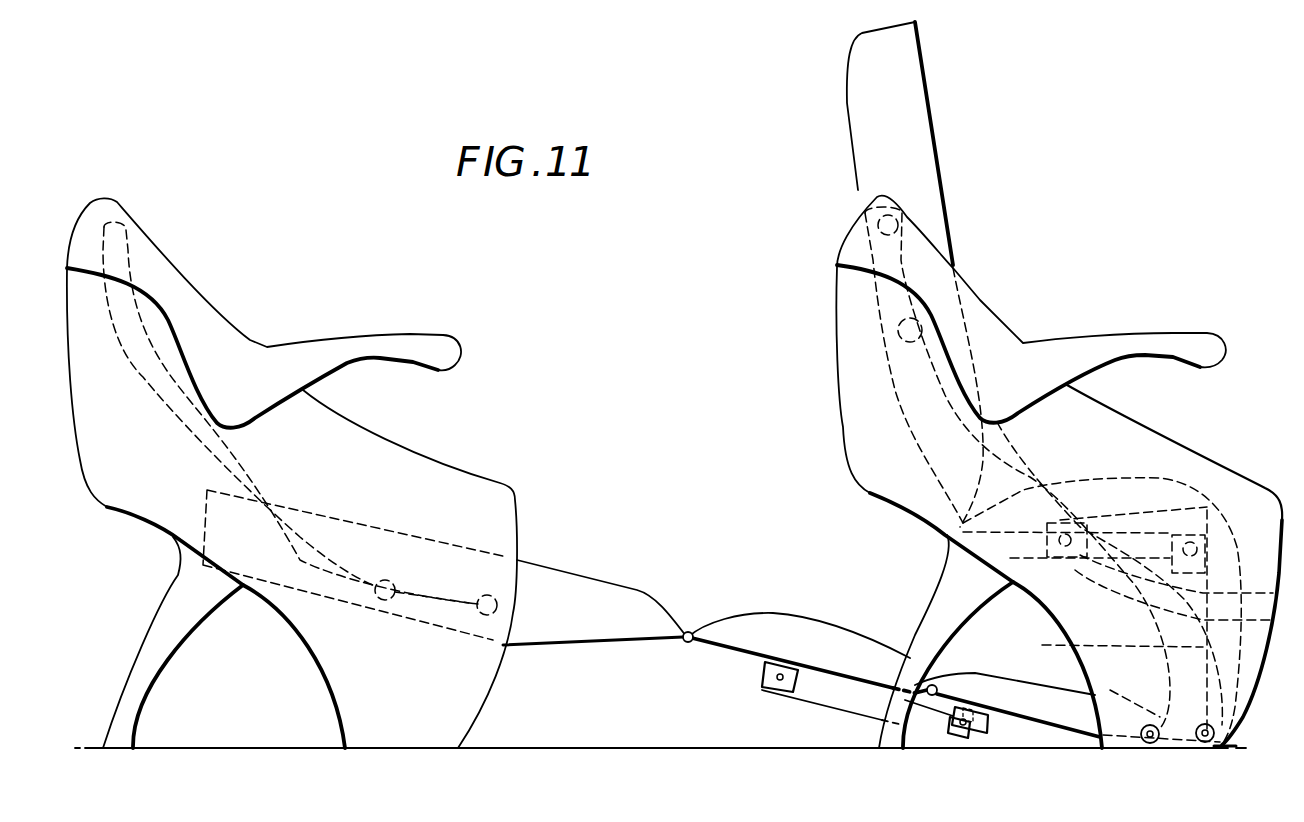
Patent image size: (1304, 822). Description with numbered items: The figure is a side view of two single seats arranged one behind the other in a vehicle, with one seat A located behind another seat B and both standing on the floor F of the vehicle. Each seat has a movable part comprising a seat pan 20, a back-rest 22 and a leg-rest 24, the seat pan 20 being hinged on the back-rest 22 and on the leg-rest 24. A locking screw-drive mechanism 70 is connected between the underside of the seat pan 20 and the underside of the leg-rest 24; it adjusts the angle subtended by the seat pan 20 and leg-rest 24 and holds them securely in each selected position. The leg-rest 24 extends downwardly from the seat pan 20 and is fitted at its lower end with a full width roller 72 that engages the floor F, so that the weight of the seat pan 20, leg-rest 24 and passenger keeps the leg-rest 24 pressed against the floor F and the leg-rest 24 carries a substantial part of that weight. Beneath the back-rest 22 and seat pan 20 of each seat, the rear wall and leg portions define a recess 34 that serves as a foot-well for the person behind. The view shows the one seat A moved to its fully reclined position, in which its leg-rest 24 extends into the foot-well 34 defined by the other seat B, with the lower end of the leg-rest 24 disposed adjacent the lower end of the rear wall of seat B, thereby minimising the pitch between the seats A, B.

The seat pan 20 is at (775, 627).
The back-rest 22 is at (367, 520).
The leg-rest 24 is at (993, 683).
The recess 34 is at (1050, 672).
The locking screw-drive mechanism 70 is at (808, 683).
The full width roller 72 is at (1210, 750).
The one seat A is at (187, 259).
The other seat B is at (982, 277).
The floor F is at (642, 750).